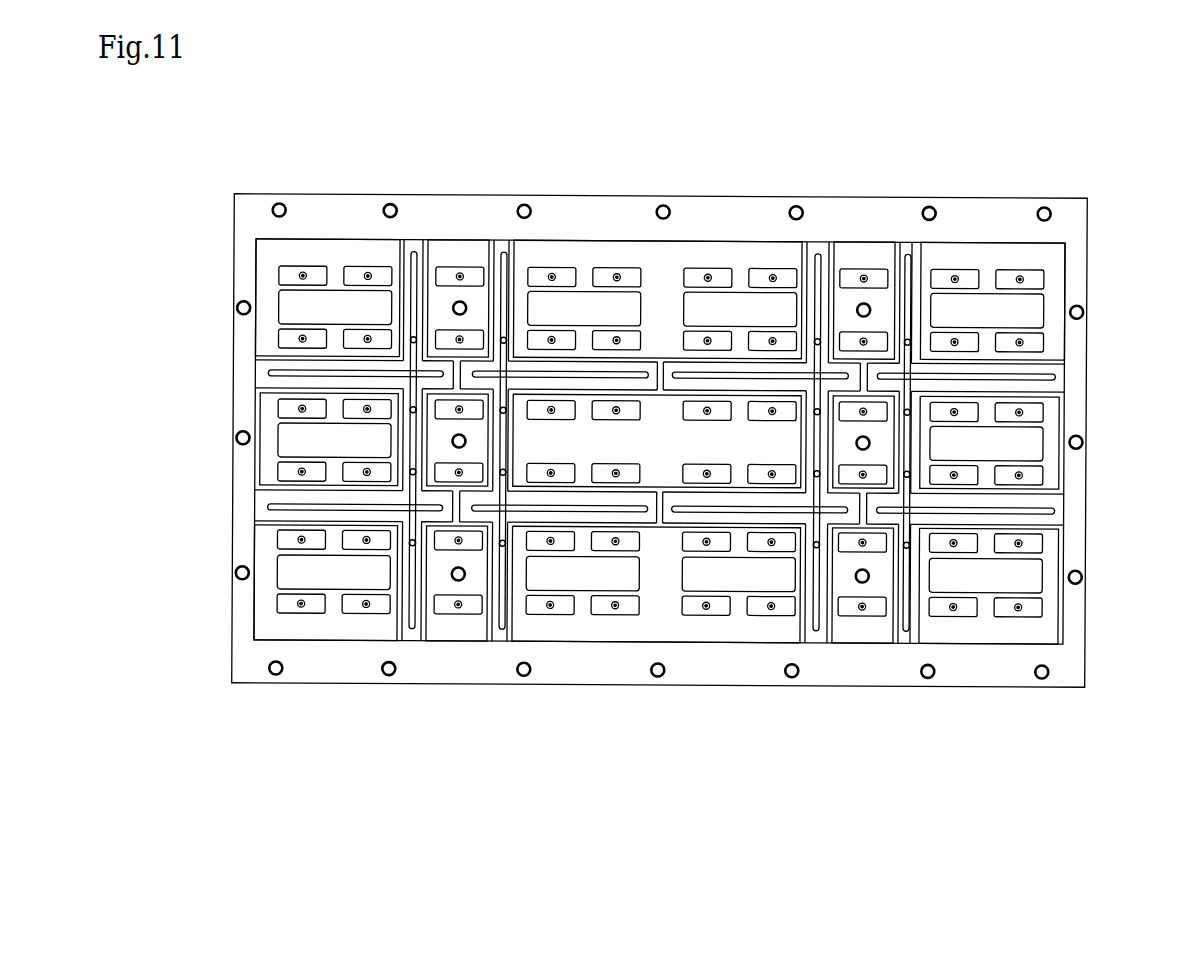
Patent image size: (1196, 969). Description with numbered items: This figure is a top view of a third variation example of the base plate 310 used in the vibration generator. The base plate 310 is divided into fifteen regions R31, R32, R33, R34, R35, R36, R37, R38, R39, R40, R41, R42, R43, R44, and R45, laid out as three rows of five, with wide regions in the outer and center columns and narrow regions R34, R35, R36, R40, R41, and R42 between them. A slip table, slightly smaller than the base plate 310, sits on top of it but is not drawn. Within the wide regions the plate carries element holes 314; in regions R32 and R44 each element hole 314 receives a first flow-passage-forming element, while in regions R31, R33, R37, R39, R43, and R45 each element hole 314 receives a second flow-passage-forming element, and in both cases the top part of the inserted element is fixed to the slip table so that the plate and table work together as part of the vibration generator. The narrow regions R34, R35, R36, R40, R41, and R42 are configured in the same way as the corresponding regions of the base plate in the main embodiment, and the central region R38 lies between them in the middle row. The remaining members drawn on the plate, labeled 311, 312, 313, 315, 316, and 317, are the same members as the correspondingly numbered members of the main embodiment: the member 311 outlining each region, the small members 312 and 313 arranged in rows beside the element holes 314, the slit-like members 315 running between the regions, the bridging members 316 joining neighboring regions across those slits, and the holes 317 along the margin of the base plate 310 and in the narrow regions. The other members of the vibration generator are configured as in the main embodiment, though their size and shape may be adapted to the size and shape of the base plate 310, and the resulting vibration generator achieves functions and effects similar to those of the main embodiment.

The base plate 310 is at (1089, 190).
The member corresponding to reference numeral 11 of the embodiment 311 is at (418, 253).
The member corresponding to reference numeral 12 of the embodiment 312 is at (572, 277).
The member corresponding to reference numeral 13 of the embodiment 313 is at (550, 277).
The element hole 314 is at (615, 303).
The member corresponding to reference numeral 15 of the embodiment 315 is at (400, 252).
The member corresponding to reference numeral 16 of the embodiment 316 is at (432, 632).
The member corresponding to reference numeral 17 of the embodiment 317 is at (275, 205).
The region R31 is at (267, 253).
The region R32 is at (263, 452).
The region R33 is at (282, 633).
The region R34 is at (460, 255).
The region R35 is at (440, 447).
The region R36 is at (447, 583).
The region R37 is at (662, 300).
The region R38 is at (753, 440).
The region R39 is at (628, 627).
The region R40 is at (878, 257).
The region R41 is at (882, 448).
The region R42 is at (848, 633).
The region R43 is at (1053, 258).
The region R44 is at (1053, 392).
The region R45 is at (1053, 630).